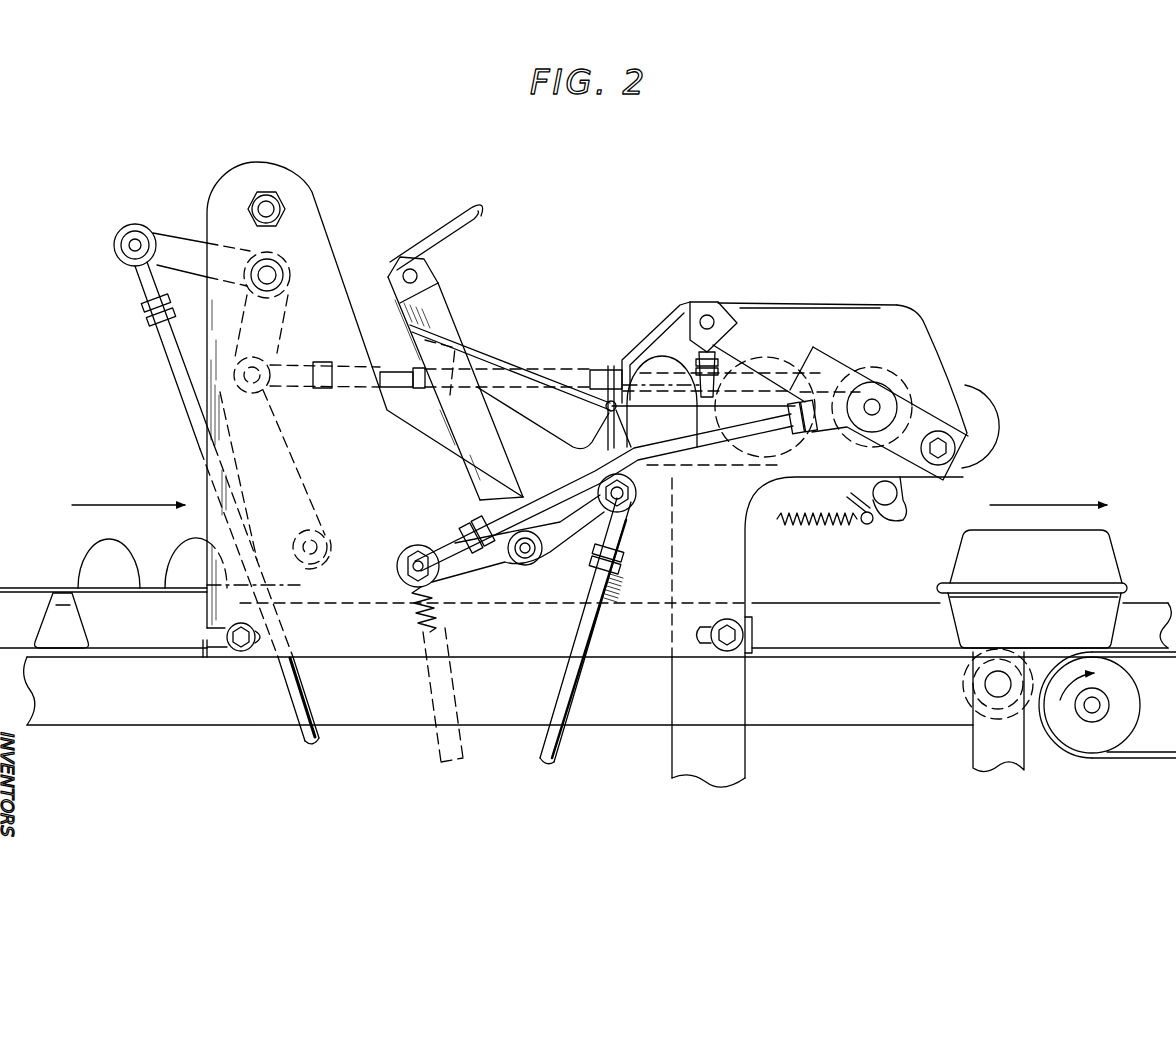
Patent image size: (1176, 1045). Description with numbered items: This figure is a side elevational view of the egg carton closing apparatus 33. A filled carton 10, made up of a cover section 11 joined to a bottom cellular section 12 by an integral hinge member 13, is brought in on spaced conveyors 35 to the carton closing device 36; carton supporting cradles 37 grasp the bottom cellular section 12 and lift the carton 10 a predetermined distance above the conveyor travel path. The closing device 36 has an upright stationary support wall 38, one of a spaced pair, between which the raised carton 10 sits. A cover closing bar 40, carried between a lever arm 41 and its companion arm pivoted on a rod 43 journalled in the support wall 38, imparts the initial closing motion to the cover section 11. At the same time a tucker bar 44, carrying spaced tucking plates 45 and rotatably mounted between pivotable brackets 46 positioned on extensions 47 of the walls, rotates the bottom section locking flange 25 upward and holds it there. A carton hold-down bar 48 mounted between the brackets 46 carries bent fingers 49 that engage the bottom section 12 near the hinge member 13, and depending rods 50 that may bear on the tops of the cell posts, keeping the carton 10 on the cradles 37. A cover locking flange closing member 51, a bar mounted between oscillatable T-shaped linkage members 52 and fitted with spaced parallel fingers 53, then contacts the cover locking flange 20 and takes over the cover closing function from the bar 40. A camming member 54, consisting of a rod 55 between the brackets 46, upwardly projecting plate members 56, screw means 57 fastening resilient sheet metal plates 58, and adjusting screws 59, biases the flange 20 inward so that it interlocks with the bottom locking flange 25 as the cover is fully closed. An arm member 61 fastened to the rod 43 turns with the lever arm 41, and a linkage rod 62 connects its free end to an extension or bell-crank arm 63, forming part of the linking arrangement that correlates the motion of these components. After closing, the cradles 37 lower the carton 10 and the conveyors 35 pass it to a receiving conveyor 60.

The carton 10 is at (60, 585).
The cover section 11 is at (568, 421).
The bottom cellular section 12 is at (733, 470).
The hinge member 13 is at (611, 400).
The cover section locking flange 20 is at (393, 395).
The bottom section locking flange 25 is at (830, 470).
The egg carton closing apparatus 33 is at (206, 473).
The conveyors 35 is at (160, 652).
The carton closing device 36 is at (338, 262).
The carton supporting cradles 37 is at (598, 473).
The upright stationary support wall 38 is at (753, 617).
The cover closing bar 40 is at (326, 534).
The lever arm 41 is at (235, 432).
The rod 43 is at (271, 272).
The tucker bar 44 is at (890, 506).
The tucking plates 45 is at (851, 500).
The pivotable brackets 46 is at (945, 372).
The extensions 47 is at (1000, 418).
The carton hold-down bar 48 is at (714, 330).
The bent fingers 49 is at (654, 327).
The depending rods 50 is at (680, 307).
The carton cover locking flange closing member 51 is at (400, 287).
The oscillatable linkage members 52 is at (473, 494).
The fingers 53 is at (426, 240).
The carton cover locking flange camming member 54 is at (856, 340).
The rod 55 is at (897, 374).
The plate members 56 is at (838, 335).
The screw means 57 is at (842, 345).
The resilient sheet metal plate 58 is at (778, 352).
The adjusting screw 59 is at (868, 345).
The receiving conveyor 60 is at (1134, 765).
The arm member 61 is at (284, 344).
The linkage rod 62 is at (530, 560).
The linkage member 63 is at (126, 238).